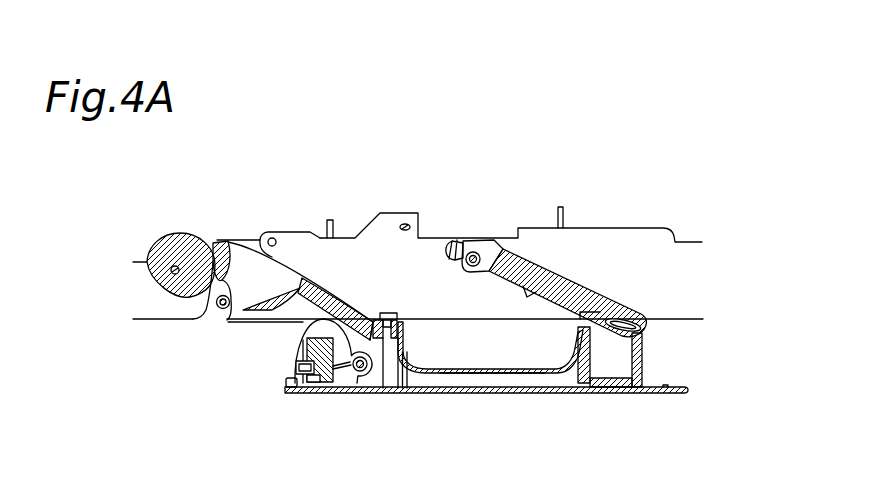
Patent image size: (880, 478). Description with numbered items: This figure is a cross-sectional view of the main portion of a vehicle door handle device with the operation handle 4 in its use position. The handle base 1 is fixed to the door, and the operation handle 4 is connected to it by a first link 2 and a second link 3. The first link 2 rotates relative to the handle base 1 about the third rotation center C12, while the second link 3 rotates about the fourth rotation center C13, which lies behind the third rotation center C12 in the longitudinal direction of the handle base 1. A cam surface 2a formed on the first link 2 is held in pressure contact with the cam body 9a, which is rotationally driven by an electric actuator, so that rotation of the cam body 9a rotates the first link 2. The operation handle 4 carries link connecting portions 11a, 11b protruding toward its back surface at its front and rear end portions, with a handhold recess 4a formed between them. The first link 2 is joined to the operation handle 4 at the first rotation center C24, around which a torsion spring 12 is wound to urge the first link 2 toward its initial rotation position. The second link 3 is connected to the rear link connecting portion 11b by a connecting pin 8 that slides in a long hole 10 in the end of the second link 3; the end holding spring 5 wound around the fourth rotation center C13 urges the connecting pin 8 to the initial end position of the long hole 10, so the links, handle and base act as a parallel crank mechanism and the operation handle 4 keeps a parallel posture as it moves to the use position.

The handle base 1 is at (636, 238).
The first link 2 is at (298, 294).
The cam surface 2a is at (216, 241).
The second link 3 is at (550, 278).
The operation handle 4 is at (457, 393).
The handhold recess 4a is at (503, 374).
The end holding spring 5 is at (466, 247).
The connecting pin 8 is at (604, 338).
The cam body 9a is at (167, 236).
The long hole 10 is at (643, 318).
The link connecting portion 11a is at (388, 388).
The link connecting portion 11b is at (645, 348).
The torsion spring 12 is at (338, 389).
The third rotation center C12 is at (219, 308).
The fourth rotation center C13 is at (474, 257).
The first rotation center C24 is at (357, 380).